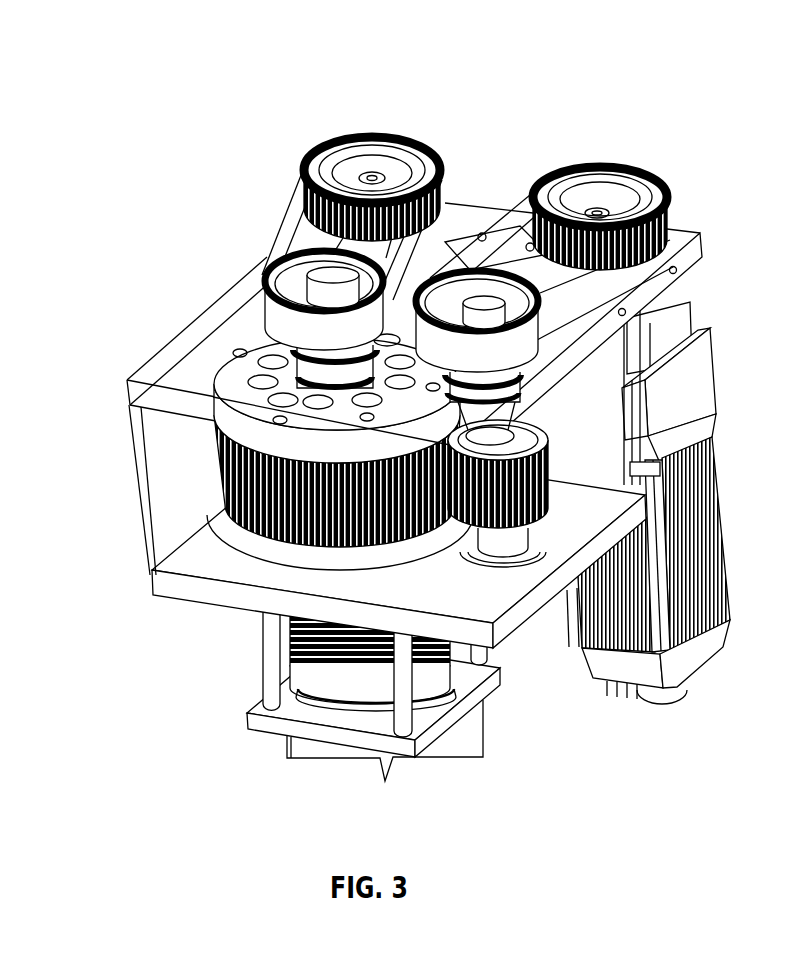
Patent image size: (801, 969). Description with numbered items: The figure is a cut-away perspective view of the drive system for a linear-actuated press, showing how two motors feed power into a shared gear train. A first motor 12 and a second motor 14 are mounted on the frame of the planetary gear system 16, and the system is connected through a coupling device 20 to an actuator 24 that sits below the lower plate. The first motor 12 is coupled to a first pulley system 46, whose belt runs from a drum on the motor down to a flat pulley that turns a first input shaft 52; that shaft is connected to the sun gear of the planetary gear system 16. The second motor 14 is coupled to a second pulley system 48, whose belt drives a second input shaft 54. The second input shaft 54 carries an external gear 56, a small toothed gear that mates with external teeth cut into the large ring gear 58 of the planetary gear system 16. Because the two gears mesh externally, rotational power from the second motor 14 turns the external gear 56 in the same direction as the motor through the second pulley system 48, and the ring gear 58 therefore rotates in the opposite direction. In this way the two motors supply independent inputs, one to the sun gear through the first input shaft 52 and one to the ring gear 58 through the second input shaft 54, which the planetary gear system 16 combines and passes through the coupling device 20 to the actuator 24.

The first motor 12 is at (464, 219).
The second motor 14 is at (687, 370).
The planetary gear system 16 is at (179, 612).
The coupling device 20 is at (310, 641).
The actuator 24 is at (483, 731).
The first pulley system 46 is at (296, 224).
The second pulley system 48 is at (630, 258).
The first input shaft 52 is at (268, 264).
The second input shaft 54 is at (470, 300).
The external gear 56 is at (543, 474).
The ring gear 58 is at (217, 490).